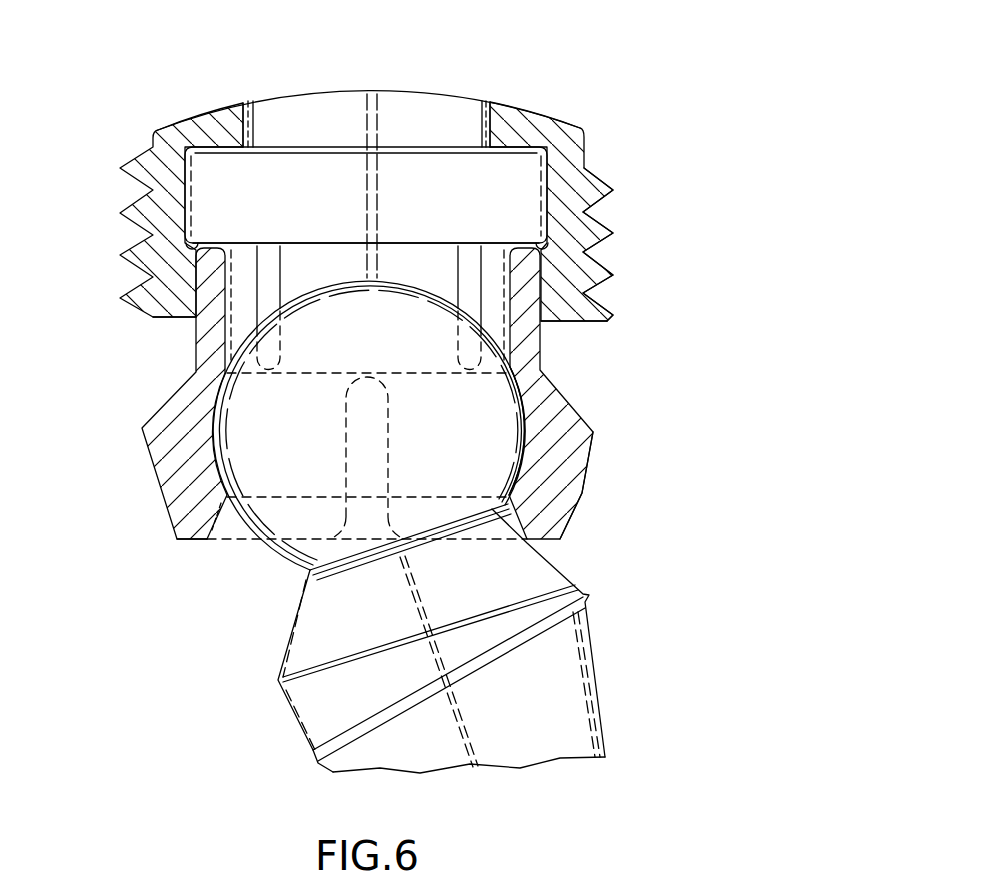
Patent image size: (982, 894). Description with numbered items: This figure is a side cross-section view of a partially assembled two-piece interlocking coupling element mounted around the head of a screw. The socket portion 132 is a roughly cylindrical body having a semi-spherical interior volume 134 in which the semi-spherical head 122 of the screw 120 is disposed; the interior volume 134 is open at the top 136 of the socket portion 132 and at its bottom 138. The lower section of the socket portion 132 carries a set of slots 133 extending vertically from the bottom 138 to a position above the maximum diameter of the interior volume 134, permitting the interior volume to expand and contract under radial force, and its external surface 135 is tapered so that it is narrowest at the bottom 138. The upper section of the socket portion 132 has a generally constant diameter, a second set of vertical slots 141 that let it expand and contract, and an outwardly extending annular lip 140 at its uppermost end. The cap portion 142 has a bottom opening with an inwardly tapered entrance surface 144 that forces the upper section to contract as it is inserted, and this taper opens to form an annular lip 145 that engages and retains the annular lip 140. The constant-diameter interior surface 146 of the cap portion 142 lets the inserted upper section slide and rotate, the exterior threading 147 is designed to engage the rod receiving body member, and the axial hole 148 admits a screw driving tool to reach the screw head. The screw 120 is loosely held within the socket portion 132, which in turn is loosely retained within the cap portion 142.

The screw 120 is at (572, 650).
The semi-spherical head 122 is at (498, 390).
The socket portion 132 is at (614, 405).
The slots 133 is at (355, 467).
The interior volume 134 is at (467, 451).
The external surface 135 is at (578, 493).
The top 136 is at (395, 243).
The bottom 138 is at (229, 552).
The annular lip 140 is at (192, 248).
The vertical slots 141 is at (472, 293).
The cap portion 142 is at (592, 118).
The tapered entrance surface 144 is at (182, 316).
The annular lip 145 is at (557, 310).
The interior surface 146 is at (188, 167).
The threading 147 is at (597, 222).
The axial hole 148 is at (371, 97).